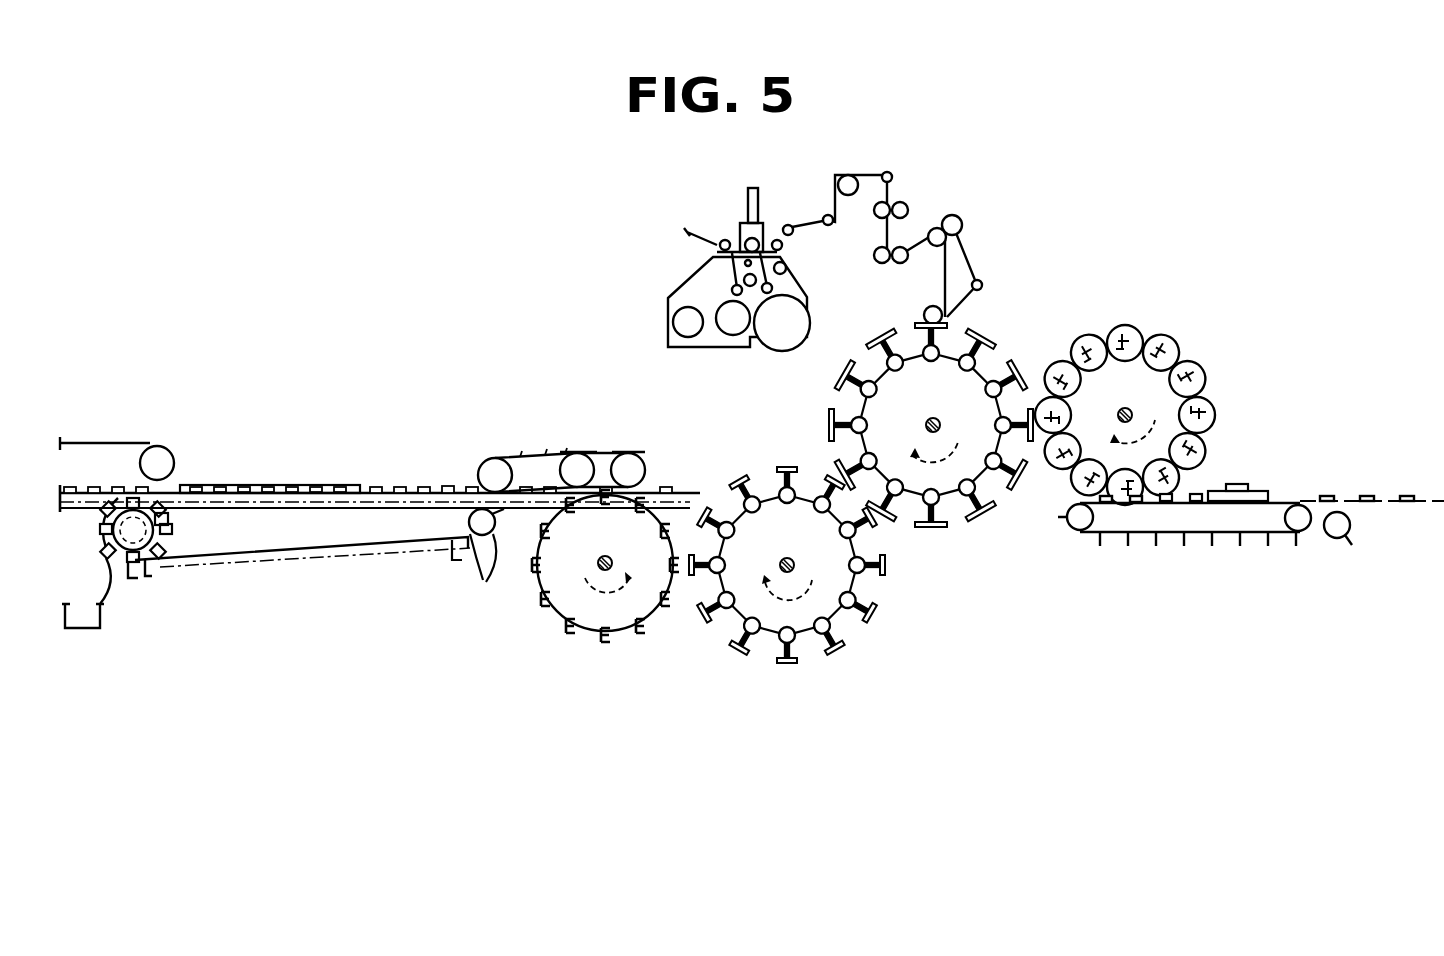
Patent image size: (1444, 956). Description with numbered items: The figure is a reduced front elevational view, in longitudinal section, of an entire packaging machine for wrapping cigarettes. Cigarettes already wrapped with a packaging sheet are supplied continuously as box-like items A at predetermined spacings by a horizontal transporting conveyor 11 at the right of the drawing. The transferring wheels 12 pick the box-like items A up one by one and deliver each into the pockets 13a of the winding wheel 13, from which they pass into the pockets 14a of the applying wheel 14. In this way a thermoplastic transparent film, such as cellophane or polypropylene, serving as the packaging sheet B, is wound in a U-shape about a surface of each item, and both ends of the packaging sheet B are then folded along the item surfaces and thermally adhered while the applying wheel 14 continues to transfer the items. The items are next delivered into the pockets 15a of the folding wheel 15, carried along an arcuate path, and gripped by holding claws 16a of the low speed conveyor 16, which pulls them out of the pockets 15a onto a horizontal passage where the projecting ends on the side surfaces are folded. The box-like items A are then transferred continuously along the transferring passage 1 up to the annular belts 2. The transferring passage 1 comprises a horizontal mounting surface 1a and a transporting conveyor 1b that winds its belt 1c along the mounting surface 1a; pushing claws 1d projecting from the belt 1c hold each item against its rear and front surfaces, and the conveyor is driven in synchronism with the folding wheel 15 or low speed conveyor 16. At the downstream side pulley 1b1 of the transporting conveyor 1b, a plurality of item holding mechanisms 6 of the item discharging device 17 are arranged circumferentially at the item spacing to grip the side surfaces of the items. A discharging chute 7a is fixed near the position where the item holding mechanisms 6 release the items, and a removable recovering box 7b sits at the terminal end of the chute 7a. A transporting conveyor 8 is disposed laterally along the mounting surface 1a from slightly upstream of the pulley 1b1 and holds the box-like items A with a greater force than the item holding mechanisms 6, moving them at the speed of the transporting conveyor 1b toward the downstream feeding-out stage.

The transferring passage 1 is at (391, 490).
The horizontal mounting surface 1a is at (409, 490).
The transporting conveyor 1b is at (399, 541).
The downstream side pulley 1b1 is at (168, 520).
The belt 1c is at (345, 512).
The pushing claws 1d is at (478, 558).
The annular belts 2 is at (263, 485).
The item holding mechanisms 6 is at (150, 575).
The discharging chute 7a is at (106, 526).
The recovering box 7b is at (102, 613).
The transporting conveyor 8 is at (102, 445).
The horizontal transporting conveyor 11 is at (1276, 500).
The transferring wheels 12 is at (1161, 334).
The winding wheel 13 is at (986, 338).
The pockets 13a is at (882, 344).
The applying wheel 14 is at (858, 587).
The pockets 14a is at (754, 488).
The folding wheel 15 is at (596, 640).
The pockets 15a is at (673, 522).
The low speed conveyor 16 is at (634, 450).
The holding claws 16a is at (620, 452).
The item discharging device 17 is at (96, 496).
The box-like items A is at (1191, 494).
The packaging sheet B is at (930, 322).